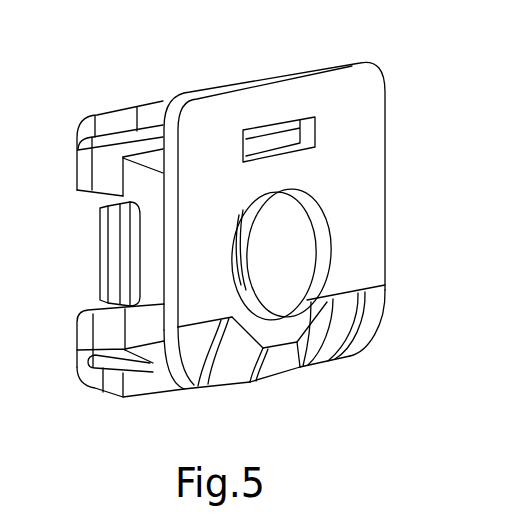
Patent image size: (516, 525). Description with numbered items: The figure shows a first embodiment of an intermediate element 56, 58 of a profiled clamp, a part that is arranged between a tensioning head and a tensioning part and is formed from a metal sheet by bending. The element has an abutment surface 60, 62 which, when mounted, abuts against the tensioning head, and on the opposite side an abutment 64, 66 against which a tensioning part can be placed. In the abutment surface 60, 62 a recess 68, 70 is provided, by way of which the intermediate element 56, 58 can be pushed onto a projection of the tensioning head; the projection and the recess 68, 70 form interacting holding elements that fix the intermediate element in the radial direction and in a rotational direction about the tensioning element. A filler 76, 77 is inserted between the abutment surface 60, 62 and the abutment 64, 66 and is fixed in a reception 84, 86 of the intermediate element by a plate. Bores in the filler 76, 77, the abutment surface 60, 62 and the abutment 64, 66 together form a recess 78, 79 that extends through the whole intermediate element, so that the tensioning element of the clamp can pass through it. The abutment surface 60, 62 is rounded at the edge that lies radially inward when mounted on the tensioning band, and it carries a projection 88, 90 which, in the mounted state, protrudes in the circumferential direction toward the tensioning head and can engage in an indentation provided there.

The intermediate element 56 is at (240, 216).
The intermediate element 58 is at (393, 52).
The abutment surface 60 is at (304, 225).
The abutment surface 62 is at (372, 183).
The abutment 64 is at (120, 128).
The abutment 66 is at (105, 126).
The recess 68 is at (180, 224).
The recess 70 is at (275, 137).
The filler 76 is at (87, 254).
The filler 77 is at (145, 272).
The recess 78 is at (337, 254).
The recess 79 is at (303, 252).
The reception 84 is at (173, 113).
The reception 86 is at (137, 186).
The projection 88 is at (279, 367).
The projection 90 is at (277, 362).